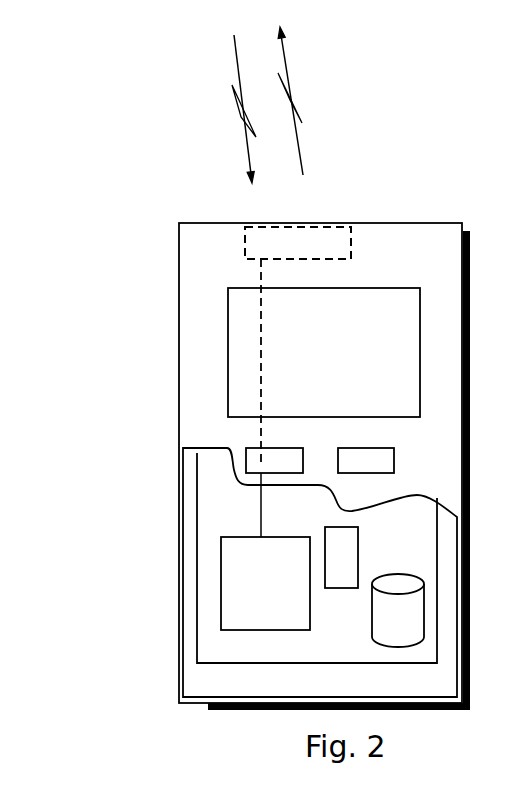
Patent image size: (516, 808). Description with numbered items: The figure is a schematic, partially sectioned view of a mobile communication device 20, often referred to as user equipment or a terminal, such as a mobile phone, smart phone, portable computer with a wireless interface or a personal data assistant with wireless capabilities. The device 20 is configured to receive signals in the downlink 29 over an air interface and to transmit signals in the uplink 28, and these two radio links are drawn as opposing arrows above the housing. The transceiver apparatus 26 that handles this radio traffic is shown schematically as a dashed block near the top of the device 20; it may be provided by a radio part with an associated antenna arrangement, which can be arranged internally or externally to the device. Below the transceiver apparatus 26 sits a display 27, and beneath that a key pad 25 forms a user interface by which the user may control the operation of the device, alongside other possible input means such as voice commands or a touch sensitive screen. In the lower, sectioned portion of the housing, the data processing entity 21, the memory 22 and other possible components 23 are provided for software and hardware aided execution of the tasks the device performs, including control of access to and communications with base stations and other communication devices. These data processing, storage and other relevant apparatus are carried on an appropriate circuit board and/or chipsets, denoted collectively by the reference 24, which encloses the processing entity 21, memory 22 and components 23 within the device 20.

The communication device 20 is at (179, 263).
The data processing entity 21 is at (229, 568).
The memory 22 is at (392, 622).
The other possible components 23 is at (342, 543).
The circuit board and/or chipsets 24 is at (220, 648).
The key pad 25 is at (250, 462).
The transceiver apparatus 26 is at (343, 237).
The display 27 is at (243, 338).
The uplink 28 is at (298, 92).
The downlink 29 is at (243, 73).